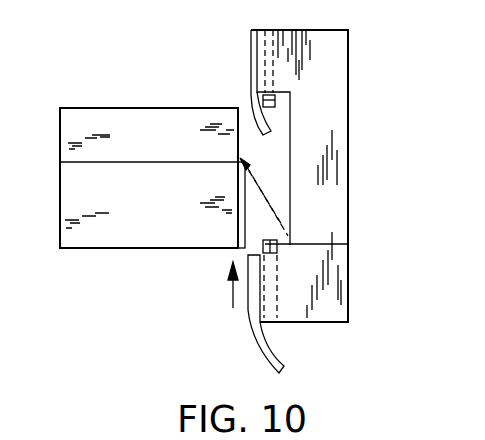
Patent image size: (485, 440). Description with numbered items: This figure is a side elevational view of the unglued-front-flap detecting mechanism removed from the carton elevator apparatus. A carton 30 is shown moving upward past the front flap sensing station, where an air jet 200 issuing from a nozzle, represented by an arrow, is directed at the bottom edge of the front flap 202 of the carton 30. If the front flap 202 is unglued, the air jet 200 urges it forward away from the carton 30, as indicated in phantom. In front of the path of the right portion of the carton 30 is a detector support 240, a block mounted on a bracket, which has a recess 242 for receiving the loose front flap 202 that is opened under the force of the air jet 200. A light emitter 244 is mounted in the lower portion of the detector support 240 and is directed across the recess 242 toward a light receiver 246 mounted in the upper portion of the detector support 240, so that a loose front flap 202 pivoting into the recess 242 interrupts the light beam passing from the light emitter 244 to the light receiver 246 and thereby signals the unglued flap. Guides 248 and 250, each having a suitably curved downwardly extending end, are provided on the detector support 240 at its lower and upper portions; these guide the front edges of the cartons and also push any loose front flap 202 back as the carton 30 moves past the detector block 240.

The carton 30 is at (123, 108).
The air jet 200 is at (230, 289).
The front flap 202 is at (238, 222).
The detector support 240 is at (340, 44).
The recess 242 is at (283, 142).
The light emitter 244 is at (348, 244).
The light receiver 246 is at (278, 98).
The guide 248 is at (284, 367).
The guide 250 is at (257, 88).